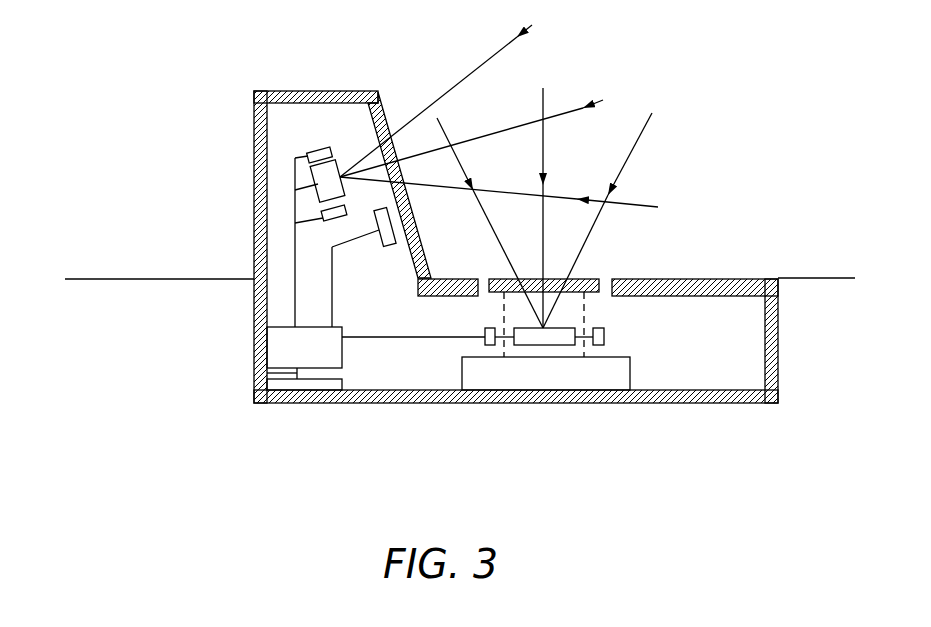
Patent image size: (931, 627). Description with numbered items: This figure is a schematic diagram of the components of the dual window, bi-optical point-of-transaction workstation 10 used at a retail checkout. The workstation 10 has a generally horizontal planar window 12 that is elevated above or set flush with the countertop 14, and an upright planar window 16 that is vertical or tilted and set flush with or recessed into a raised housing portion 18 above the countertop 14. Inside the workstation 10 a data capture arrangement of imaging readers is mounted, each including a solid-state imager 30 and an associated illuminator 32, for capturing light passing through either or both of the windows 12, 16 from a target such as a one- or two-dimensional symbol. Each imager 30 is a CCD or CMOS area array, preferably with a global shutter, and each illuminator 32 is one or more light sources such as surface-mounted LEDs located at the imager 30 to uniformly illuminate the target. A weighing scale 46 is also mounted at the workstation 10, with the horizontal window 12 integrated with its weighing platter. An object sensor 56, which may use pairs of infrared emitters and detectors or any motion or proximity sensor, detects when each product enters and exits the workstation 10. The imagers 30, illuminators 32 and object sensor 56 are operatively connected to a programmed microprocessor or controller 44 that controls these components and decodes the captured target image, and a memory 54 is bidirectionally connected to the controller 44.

The point-of-transaction workstation 10 is at (712, 228).
The horizontal planar window 12 is at (583, 278).
The countertop 14 is at (157, 279).
The upright planar window 16 is at (387, 120).
The raised housing portion 18 is at (317, 91).
The solid-state imager 30 is at (588, 445).
The illuminator 32 is at (697, 417).
The controller 44 is at (288, 356).
The weighing scale 46 is at (468, 375).
The memory 54 is at (280, 385).
The object sensor 56 is at (389, 245).